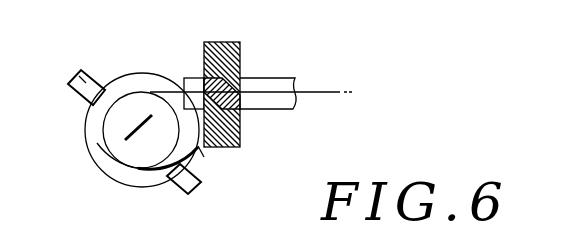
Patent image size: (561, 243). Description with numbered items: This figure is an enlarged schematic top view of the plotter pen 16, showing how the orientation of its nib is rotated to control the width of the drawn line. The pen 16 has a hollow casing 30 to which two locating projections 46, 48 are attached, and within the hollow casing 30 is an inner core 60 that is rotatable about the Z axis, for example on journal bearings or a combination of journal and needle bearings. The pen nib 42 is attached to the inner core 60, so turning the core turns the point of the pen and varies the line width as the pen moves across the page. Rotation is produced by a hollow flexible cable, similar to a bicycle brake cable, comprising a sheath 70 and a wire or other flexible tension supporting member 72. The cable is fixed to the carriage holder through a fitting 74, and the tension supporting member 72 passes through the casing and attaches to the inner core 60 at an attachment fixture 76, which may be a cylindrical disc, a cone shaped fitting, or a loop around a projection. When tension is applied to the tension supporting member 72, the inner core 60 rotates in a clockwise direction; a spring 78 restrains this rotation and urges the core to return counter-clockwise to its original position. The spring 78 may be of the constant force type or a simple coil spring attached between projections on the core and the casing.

The pen 16 is at (108, 188).
The hollow casing 30 is at (85, 121).
The pen nib 42 is at (132, 138).
The locating projection 46 is at (78, 71).
The locating projection 48 is at (183, 195).
The inner core 60 is at (96, 144).
The sheath 70 is at (276, 78).
The tension supporting member 72 is at (315, 96).
The fitting 74 is at (227, 42).
The attachment fixture 76 is at (139, 92).
The spring 78 is at (204, 157).